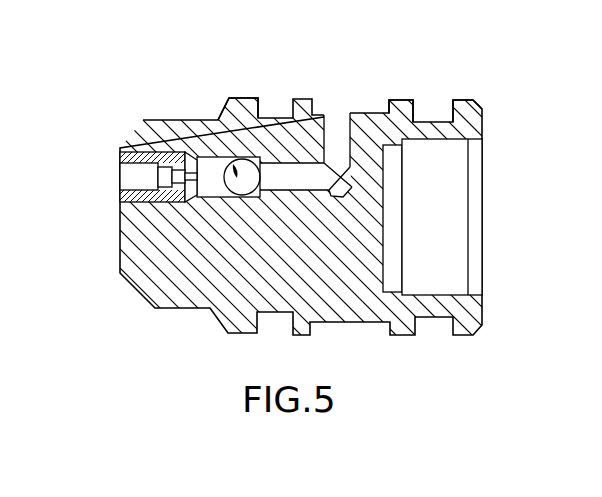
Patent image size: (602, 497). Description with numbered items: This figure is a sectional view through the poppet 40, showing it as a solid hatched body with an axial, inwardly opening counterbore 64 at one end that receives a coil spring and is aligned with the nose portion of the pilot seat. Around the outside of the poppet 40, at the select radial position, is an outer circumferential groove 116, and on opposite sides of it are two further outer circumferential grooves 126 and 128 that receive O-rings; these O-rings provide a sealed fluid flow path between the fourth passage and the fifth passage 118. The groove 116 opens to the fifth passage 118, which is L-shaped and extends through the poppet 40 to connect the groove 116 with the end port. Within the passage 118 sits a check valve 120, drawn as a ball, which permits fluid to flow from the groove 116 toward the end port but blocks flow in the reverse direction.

The poppet 40 is at (488, 90).
The counterbore 64 is at (440, 140).
The outer circumferential groove 116 is at (367, 114).
The fifth passage 118 is at (285, 180).
The check valve 120 is at (230, 157).
The outer circumferential groove 126 is at (275, 117).
The outer circumferential groove 128 is at (433, 121).